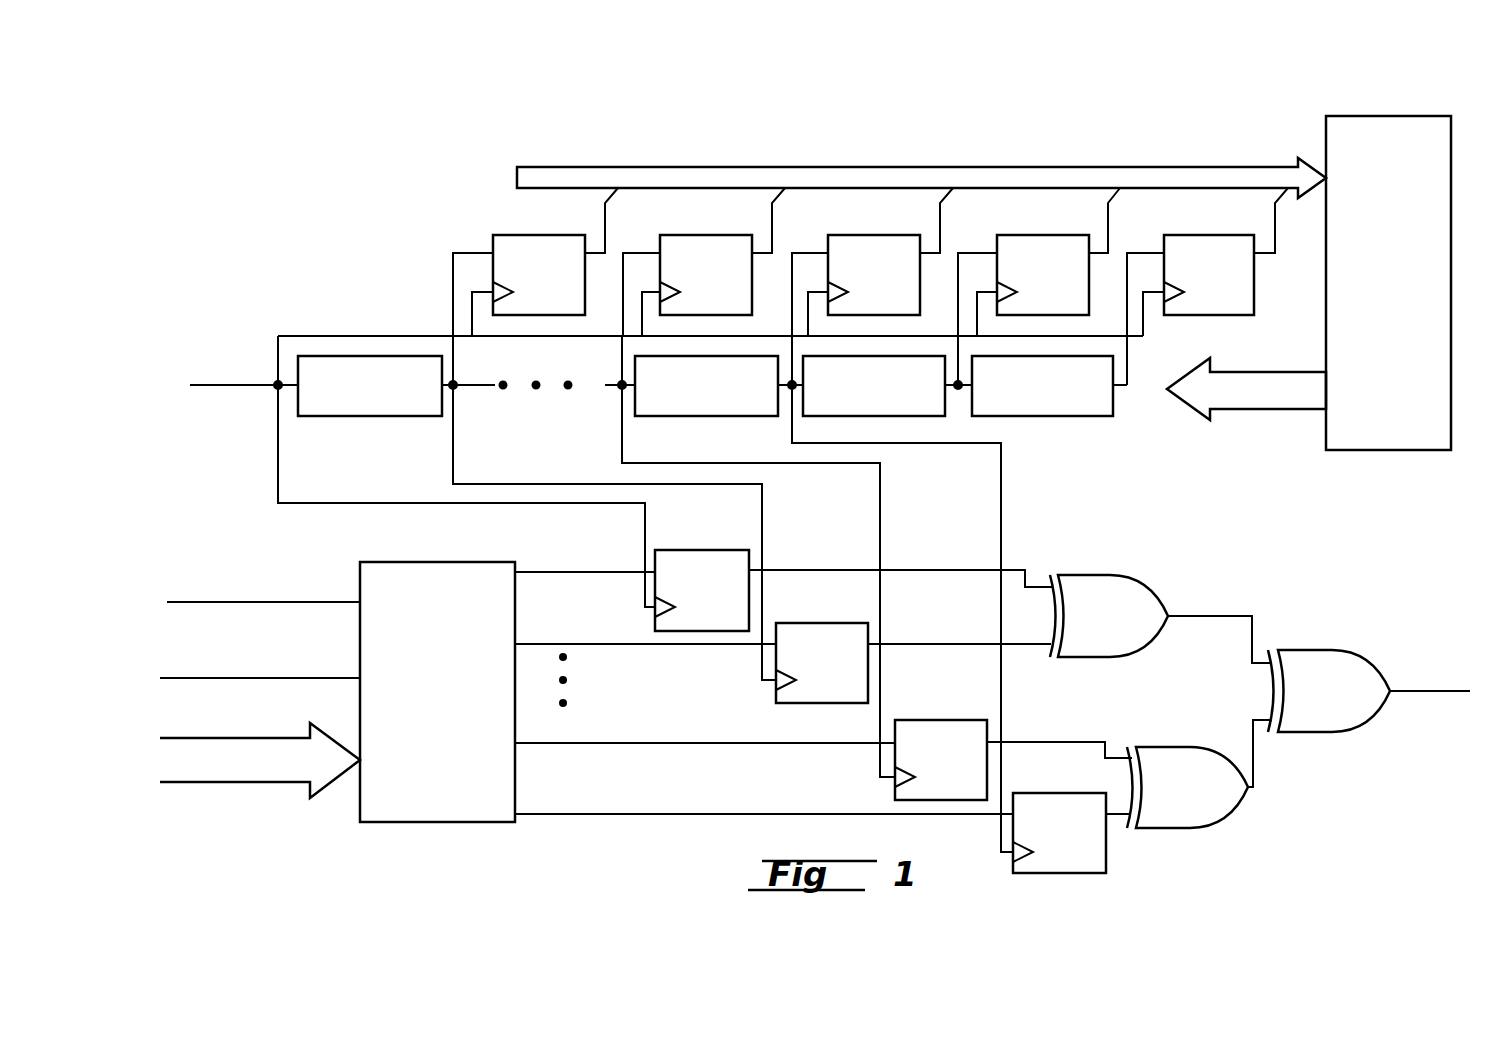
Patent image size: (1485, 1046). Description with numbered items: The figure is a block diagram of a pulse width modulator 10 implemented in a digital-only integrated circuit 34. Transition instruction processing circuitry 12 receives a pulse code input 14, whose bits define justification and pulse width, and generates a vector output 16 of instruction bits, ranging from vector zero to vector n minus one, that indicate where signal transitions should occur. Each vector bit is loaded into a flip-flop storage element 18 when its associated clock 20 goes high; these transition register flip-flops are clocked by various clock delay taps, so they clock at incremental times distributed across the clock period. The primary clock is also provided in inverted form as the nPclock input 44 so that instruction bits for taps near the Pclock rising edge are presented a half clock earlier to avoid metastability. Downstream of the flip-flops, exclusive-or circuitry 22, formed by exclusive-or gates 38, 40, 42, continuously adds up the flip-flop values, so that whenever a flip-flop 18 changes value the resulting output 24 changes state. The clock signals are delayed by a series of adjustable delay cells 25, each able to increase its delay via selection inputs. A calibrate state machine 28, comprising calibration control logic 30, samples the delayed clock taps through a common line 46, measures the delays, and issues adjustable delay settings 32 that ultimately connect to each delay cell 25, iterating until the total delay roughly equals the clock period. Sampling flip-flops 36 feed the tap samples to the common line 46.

The pulse width modulator 10 is at (505, 120).
The transition instruction processing circuitry 12 is at (447, 822).
The pulse code input 14 is at (225, 782).
The vector output 16 is at (590, 838).
The flip-flop storage element 18 is at (687, 550).
The clock 20 is at (657, 594).
The exclusive-or circuitry 22 is at (1225, 704).
The output 24 is at (1437, 709).
The adjustable delay cell 25 is at (362, 417).
The calibrate state machine 28 is at (1393, 113).
The calibration control logic 30 is at (1397, 421).
The adjustable delay settings 32 is at (1251, 528).
The digital-only integrated circuit 34 is at (1036, 140).
The sampling flip-flop 36 is at (533, 234).
The exclusive-or gate 38 is at (1091, 560).
The exclusive-or gate 40 is at (1173, 728).
The exclusive-or gate 42 is at (1334, 627).
The nPclock input 44 is at (258, 629).
The common line 46 is at (832, 173).